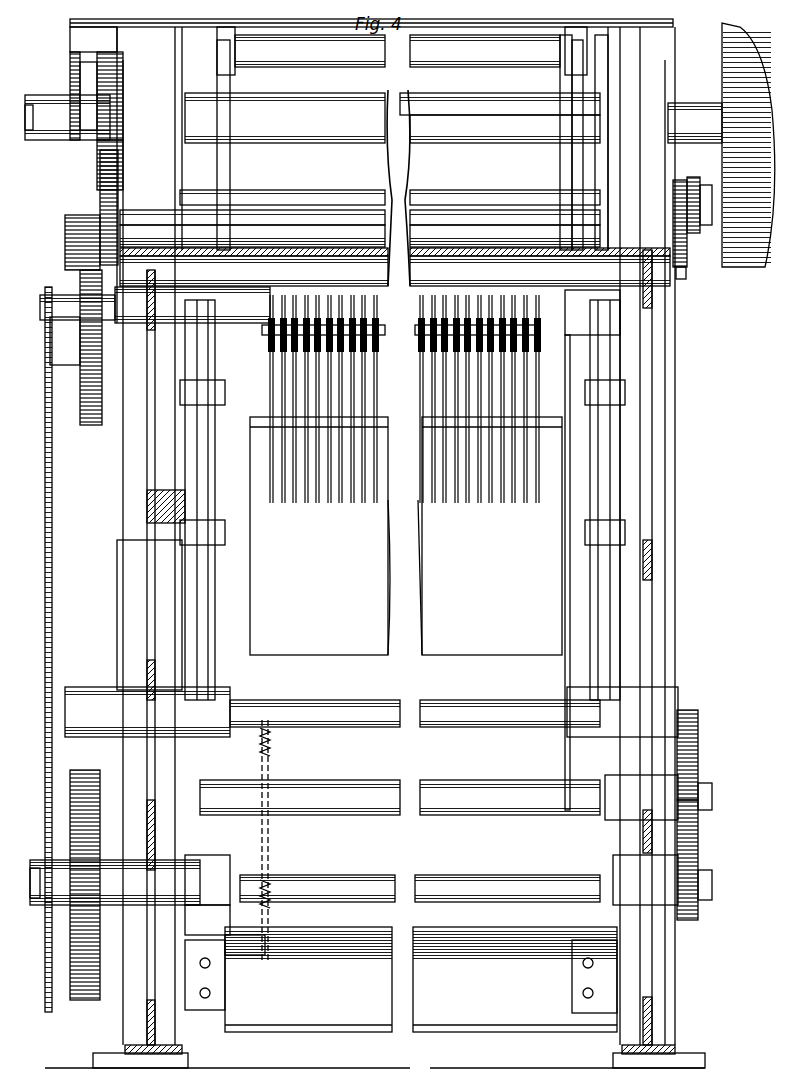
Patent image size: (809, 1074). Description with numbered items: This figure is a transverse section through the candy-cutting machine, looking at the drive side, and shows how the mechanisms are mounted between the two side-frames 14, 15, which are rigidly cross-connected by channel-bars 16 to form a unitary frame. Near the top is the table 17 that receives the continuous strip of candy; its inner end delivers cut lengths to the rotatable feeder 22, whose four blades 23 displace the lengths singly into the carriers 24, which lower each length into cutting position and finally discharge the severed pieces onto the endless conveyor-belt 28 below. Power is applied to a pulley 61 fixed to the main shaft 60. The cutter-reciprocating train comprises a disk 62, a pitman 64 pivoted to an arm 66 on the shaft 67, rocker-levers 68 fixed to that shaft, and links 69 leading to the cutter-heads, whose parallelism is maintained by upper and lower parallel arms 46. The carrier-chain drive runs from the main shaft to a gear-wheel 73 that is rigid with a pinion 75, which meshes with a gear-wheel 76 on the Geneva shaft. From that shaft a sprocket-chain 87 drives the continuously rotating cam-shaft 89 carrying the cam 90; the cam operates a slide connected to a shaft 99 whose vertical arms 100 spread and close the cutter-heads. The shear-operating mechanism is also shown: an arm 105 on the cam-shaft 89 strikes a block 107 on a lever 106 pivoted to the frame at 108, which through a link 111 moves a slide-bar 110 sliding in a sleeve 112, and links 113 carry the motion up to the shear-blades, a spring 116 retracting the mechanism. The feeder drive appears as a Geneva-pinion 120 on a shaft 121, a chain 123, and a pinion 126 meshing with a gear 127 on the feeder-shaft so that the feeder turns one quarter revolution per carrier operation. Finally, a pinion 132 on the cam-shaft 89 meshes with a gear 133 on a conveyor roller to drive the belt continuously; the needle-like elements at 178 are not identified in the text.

The side-frame 14 is at (663, 352).
The side-frame 15 is at (125, 516).
The channel-bar 16 is at (421, 979).
The table 17 is at (400, 248).
The rotatable feeder 22 is at (530, 223).
The blade 23 is at (442, 213).
The carrier 24 is at (402, 336).
The endless conveyor-belt 28 is at (483, 826).
The parallel arm 46 is at (195, 478).
The shaft 60 is at (496, 125).
The pulley 61 is at (745, 52).
The disk 62 is at (70, 188).
The pitman 64 is at (60, 135).
The arm 66 is at (90, 75).
The shaft 67 is at (312, 50).
The rocker-lever 68 is at (240, 25).
The link 69 is at (215, 165).
The gear-wheel 73 is at (100, 200).
The pinion 75 is at (75, 256).
The gear-wheel 76 is at (95, 280).
The sprocket-chain 87 is at (52, 585).
The shaft 89 is at (345, 880).
The cam 90 is at (68, 1000).
The shaft 99 is at (468, 706).
The vertical arm 100 is at (232, 606).
The arm 105 is at (190, 878).
The lever 106 is at (270, 975).
The block 107 is at (200, 950).
The pivot 108 is at (218, 920).
The slide-bar 110 is at (277, 866).
The link 111 is at (270, 920).
The sleeve 112 is at (275, 778).
The link 113 is at (250, 690).
The spring 116 is at (270, 752).
The Geneva-pinion 120 is at (248, 172).
The shaft 121 is at (510, 195).
The chain 123 is at (715, 278).
The pinion 126 is at (683, 180).
The gear 127 is at (683, 279).
The pinion 132 is at (700, 908).
The gear 133 is at (700, 760).
The needles 178 is at (446, 318).